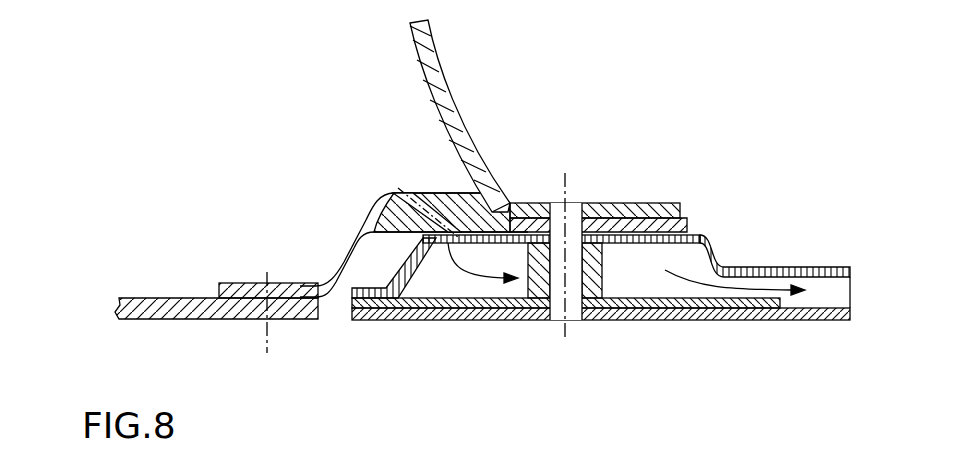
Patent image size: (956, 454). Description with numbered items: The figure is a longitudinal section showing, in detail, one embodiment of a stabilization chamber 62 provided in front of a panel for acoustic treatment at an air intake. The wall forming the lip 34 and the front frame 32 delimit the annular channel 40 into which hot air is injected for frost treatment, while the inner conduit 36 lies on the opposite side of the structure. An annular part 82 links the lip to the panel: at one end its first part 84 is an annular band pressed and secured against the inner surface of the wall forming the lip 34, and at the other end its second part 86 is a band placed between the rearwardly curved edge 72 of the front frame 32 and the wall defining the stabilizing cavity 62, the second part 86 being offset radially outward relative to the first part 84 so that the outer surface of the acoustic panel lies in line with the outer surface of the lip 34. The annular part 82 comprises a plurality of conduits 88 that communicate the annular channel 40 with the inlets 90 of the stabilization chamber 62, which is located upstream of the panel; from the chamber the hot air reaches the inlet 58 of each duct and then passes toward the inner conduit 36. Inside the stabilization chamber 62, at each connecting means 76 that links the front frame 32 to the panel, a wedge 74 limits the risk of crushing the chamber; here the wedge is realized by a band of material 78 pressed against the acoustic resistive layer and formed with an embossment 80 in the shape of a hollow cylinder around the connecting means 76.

The air intake front frame 32 is at (440, 87).
The lip 34 is at (155, 319).
The inner conduit 36 is at (566, 418).
The annular channel 40 is at (214, 123).
The inlet 58 is at (831, 296).
The stabilization chamber 62 is at (683, 258).
The rearwardly curved edge 72 is at (665, 204).
The wedge 74 is at (533, 282).
The connecting means 76 is at (565, 186).
The band of material 78 is at (738, 305).
The embossment 80 is at (592, 291).
The annular part 82 is at (366, 216).
The first part 84 is at (234, 283).
The second part 86 is at (624, 220).
The conduit 88 is at (410, 192).
The inlet of stabilization chamber 90 is at (447, 240).